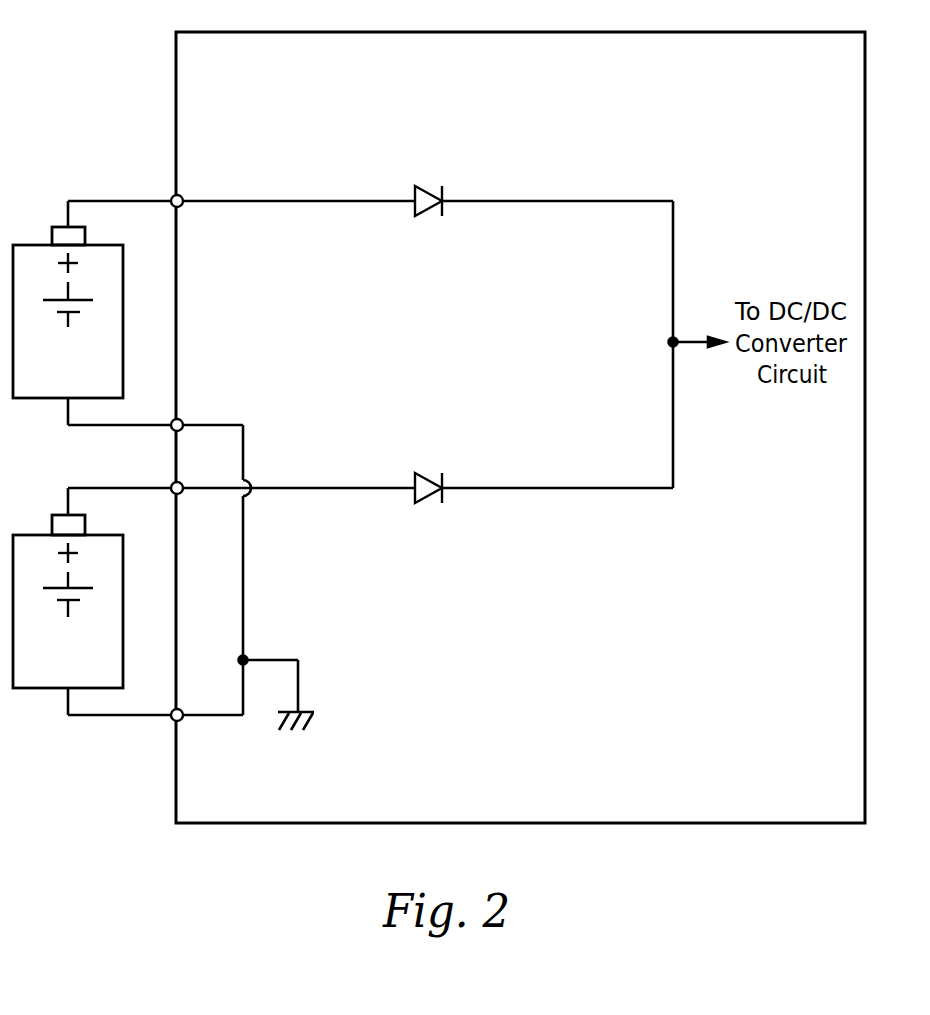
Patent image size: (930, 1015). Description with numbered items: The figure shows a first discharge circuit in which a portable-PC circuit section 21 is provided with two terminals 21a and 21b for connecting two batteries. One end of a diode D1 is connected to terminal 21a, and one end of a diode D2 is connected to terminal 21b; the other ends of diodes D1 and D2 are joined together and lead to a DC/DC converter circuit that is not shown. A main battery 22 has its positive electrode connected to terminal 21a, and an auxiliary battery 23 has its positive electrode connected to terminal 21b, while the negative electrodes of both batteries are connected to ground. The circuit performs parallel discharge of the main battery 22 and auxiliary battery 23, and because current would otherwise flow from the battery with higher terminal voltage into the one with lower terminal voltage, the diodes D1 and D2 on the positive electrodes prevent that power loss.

The portable-PC circuit section 21 is at (507, 805).
The terminal 21a is at (172, 200).
The terminal 21b is at (173, 487).
The main battery 22 is at (32, 398).
The auxiliary battery 23 is at (32, 688).
The diode D1 is at (427, 187).
The diode D2 is at (427, 475).